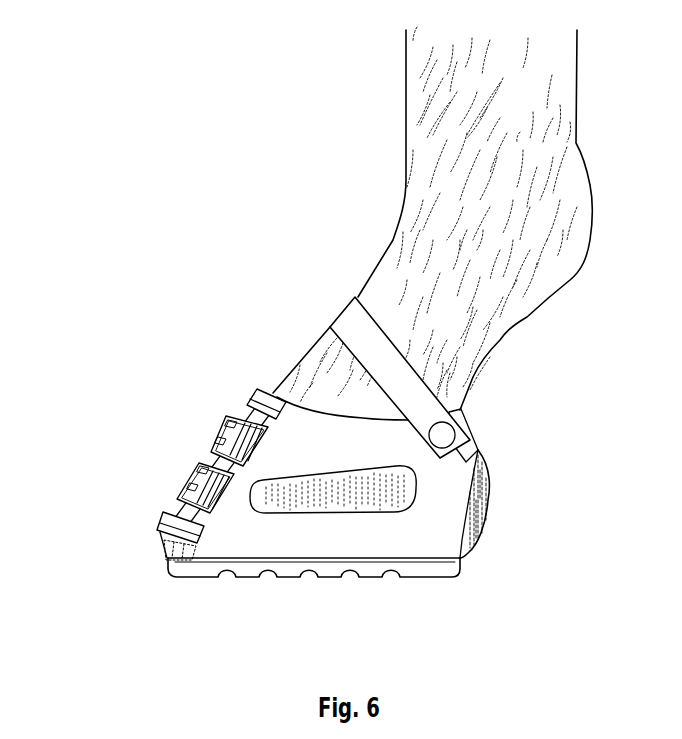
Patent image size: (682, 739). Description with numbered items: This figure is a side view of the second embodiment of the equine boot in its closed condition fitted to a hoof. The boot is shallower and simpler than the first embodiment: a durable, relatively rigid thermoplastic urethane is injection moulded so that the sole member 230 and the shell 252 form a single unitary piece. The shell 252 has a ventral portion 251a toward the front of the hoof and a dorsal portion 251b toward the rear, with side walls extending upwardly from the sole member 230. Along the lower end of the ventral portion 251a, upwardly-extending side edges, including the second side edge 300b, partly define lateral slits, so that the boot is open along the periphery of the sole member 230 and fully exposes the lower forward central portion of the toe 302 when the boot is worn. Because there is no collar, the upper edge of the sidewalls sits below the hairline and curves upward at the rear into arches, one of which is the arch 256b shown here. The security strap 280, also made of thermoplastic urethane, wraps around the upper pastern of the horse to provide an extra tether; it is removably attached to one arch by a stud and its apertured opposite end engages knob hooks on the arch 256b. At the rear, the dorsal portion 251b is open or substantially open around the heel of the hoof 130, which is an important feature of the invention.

The security strap 280 is at (360, 325).
The arch 256b is at (467, 430).
The heel of hoof 130 is at (482, 472).
The ventral portion 251a is at (230, 382).
The dorsal portion 251b is at (520, 473).
The shell 252 is at (440, 540).
The sole member 230 is at (417, 567).
The second side edge 300b is at (193, 550).
The toe 302 is at (163, 545).